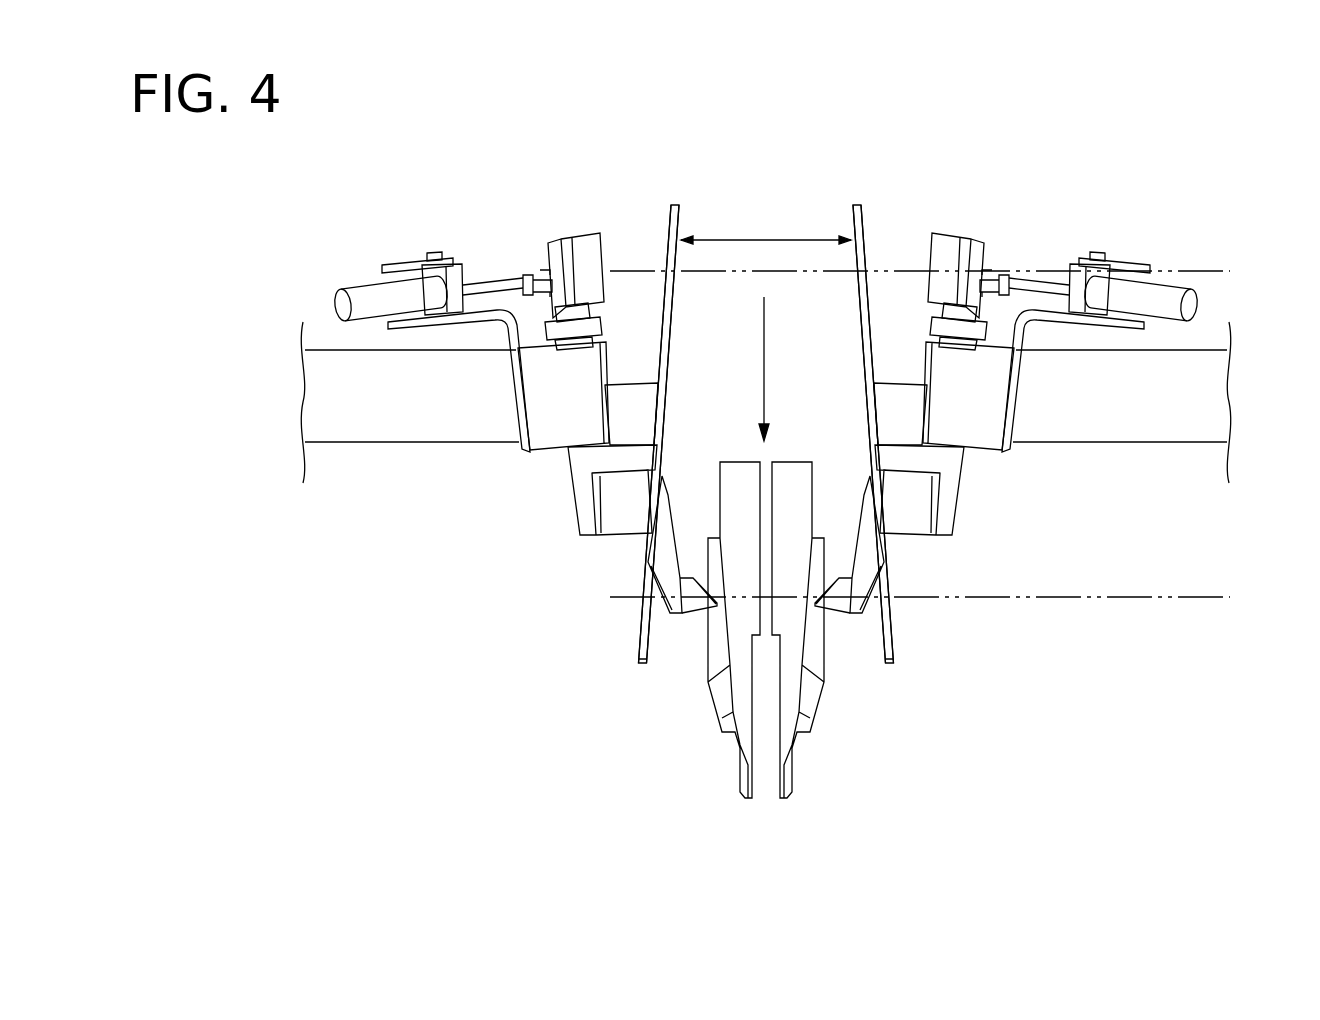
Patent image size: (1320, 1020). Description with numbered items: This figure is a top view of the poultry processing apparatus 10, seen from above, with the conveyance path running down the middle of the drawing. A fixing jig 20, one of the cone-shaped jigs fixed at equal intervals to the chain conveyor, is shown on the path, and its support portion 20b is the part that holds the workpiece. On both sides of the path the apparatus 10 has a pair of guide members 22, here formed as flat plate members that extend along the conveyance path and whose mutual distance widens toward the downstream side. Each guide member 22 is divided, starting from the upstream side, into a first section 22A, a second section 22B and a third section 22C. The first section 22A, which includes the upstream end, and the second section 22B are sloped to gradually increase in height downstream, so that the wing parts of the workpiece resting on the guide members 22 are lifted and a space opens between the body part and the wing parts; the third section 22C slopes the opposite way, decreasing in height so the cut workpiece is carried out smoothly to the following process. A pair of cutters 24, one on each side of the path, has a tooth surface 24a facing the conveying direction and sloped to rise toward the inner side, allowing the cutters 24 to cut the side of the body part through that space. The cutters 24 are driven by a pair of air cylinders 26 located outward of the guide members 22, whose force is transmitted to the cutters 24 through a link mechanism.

The poultry processing apparatus 10 is at (785, 469).
The fixing jig 20 is at (820, 630).
The support portion 20b is at (814, 734).
The guide member 22 is at (764, 420).
The first section 22A is at (668, 344).
The second section 22B is at (663, 447).
The third section 22C is at (640, 638).
The cutter 24 is at (766, 581).
The tooth surface 24a is at (699, 577).
The air cylinder 26 is at (362, 283).